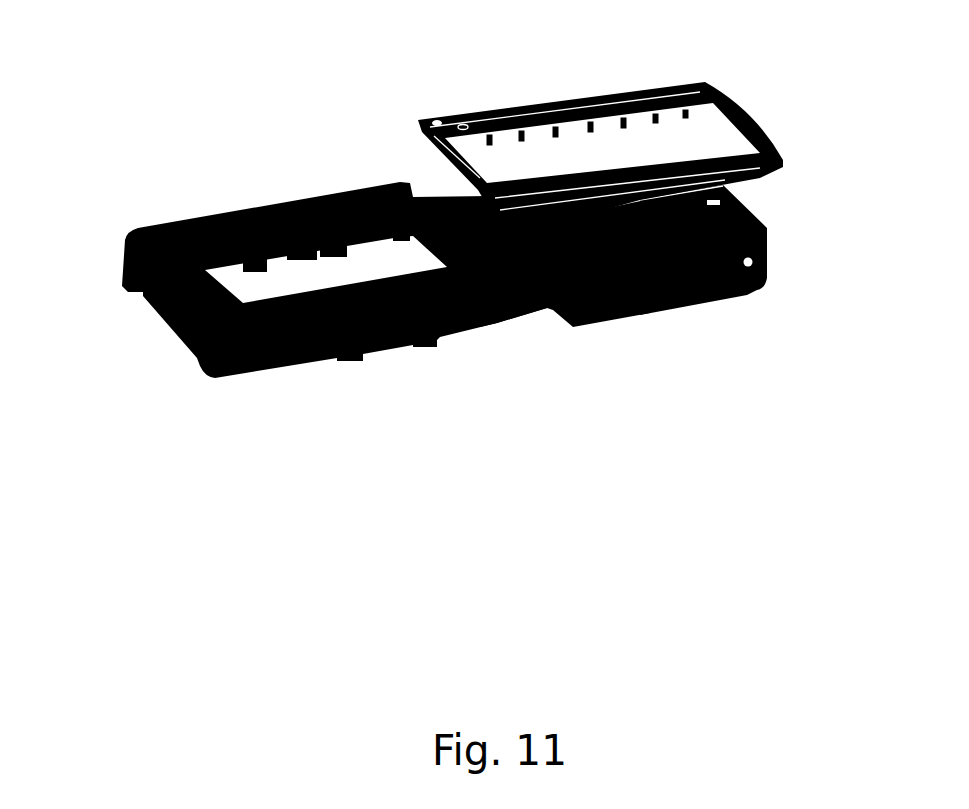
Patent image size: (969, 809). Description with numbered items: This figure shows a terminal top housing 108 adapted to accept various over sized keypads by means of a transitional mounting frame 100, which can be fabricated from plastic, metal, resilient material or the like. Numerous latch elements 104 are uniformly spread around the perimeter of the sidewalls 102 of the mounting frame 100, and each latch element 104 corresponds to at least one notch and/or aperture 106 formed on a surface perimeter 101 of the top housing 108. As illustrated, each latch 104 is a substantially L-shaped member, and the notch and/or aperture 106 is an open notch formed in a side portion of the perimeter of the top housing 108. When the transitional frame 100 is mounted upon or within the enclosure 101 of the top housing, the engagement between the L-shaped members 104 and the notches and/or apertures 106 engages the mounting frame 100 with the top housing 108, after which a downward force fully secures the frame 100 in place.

The transitional mounting frame 100 is at (446, 205).
The surface perimeter 101 is at (501, 324).
The sidewalls 102 is at (703, 82).
The latch element 104 is at (590, 100).
The notch and/or aperture 106 is at (758, 223).
The top housing 108 is at (130, 228).